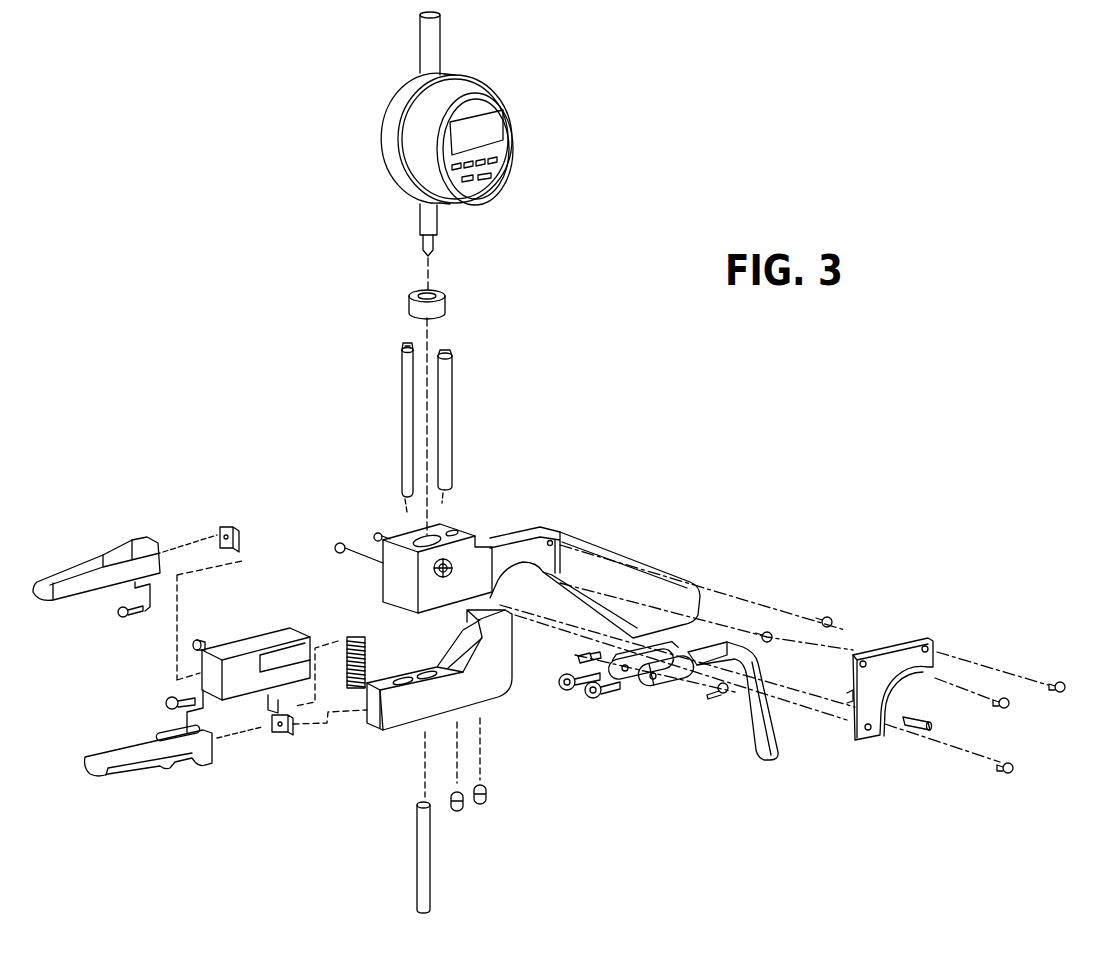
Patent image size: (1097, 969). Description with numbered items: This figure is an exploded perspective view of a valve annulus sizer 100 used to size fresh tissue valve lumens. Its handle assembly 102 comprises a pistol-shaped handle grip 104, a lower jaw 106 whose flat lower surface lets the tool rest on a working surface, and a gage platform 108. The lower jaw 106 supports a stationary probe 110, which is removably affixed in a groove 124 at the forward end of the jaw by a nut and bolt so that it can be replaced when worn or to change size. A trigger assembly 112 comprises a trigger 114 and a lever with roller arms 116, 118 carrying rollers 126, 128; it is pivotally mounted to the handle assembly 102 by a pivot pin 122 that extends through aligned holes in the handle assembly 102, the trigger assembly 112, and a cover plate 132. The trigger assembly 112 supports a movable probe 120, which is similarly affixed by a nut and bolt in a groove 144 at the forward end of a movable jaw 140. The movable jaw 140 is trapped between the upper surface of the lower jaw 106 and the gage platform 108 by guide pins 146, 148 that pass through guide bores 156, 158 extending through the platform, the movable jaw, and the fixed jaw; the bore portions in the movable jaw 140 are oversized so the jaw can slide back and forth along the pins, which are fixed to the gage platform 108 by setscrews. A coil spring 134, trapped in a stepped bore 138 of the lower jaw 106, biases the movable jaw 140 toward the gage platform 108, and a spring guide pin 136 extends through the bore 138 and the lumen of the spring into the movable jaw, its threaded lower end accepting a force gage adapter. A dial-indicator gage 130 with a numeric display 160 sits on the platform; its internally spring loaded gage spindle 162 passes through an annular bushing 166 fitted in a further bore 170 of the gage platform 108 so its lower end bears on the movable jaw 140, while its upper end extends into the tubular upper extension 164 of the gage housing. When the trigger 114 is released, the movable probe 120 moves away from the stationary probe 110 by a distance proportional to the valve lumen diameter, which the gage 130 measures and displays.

The valve annulus sizer 100 is at (742, 368).
The handle assembly 102 is at (582, 523).
The handle grip 104 is at (632, 580).
The lower jaw 106 is at (485, 695).
The gage platform 108 is at (395, 575).
The stationary probe 110 is at (95, 797).
The trigger assembly 112 is at (690, 737).
The trigger 114 is at (780, 740).
The roller arm 116 is at (630, 685).
The roller arm 118 is at (650, 687).
The movable probe 120 is at (25, 566).
The pivot pin 122 is at (940, 725).
The groove 124 is at (375, 735).
The roller 126 is at (560, 690).
The roller 128 is at (590, 705).
The gage 130 is at (365, 157).
The cover plate 132 is at (906, 636).
The coil spring 134 is at (360, 635).
The spring guide pin 136 is at (433, 853).
The bore 138 is at (425, 663).
The movable jaw 140 is at (255, 621).
The groove 144 is at (222, 653).
The guide pin 146 is at (402, 398).
The guide pin 148 is at (455, 393).
The guide bore 156 is at (393, 523).
The guide bore 158 is at (457, 521).
The numeric display 160 is at (500, 128).
The gage spindle 162 is at (440, 245).
The tubular upper extension 164 is at (418, 42).
The annular bushing 166 is at (447, 300).
The further bore 170 is at (434, 514).